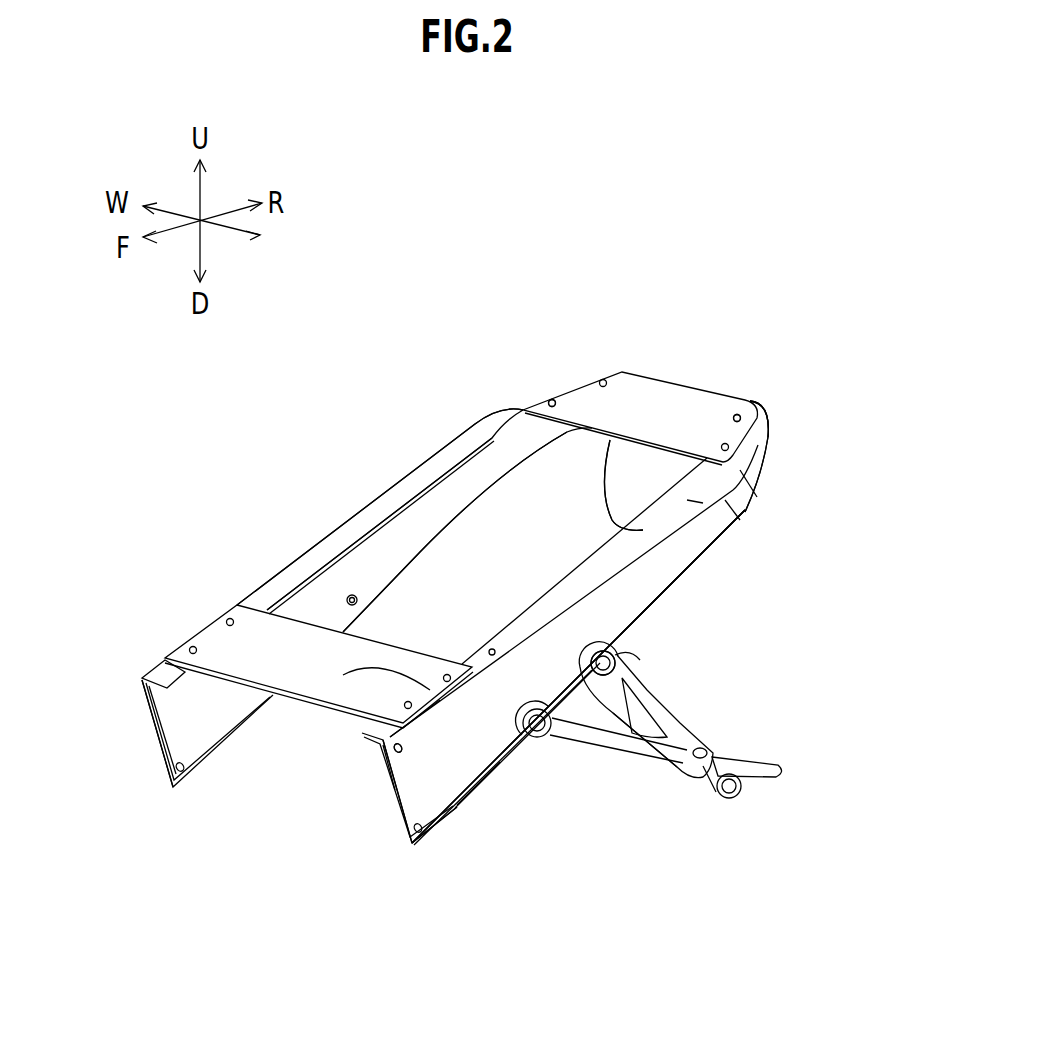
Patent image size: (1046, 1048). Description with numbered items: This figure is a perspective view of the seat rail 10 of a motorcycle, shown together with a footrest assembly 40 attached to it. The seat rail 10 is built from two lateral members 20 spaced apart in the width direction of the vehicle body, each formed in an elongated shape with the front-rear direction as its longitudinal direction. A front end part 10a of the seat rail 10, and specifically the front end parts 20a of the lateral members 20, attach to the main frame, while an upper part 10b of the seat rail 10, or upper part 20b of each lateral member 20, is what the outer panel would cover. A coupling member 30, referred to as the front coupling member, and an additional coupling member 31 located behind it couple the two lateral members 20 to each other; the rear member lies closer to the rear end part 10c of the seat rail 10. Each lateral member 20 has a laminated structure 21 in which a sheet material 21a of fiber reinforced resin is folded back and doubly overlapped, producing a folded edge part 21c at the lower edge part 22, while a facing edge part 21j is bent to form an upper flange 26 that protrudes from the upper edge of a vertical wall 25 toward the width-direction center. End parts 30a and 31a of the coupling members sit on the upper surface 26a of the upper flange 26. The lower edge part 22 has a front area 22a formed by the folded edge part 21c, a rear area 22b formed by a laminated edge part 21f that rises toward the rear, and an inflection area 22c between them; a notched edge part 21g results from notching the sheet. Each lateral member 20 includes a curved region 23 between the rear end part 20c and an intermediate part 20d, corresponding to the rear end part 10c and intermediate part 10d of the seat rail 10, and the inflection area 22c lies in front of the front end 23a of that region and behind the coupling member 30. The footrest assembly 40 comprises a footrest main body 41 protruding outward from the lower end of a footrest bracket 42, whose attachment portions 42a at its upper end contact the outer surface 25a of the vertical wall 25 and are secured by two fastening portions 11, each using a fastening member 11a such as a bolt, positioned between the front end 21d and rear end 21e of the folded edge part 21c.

The seat rail 10 is at (428, 452).
The front end part 10a is at (148, 733).
The upper part 10b is at (590, 587).
The rear end part 10c is at (770, 437).
The intermediate part 10d is at (633, 607).
The fastening portion 11 is at (617, 658).
The fastening member 11a is at (553, 740).
The lateral member 20 is at (284, 568).
The front end part 20a is at (412, 843).
The upper part 20b is at (593, 603).
The rear end part 20c is at (757, 460).
The intermediate part 20d is at (643, 587).
The laminated structure 21 is at (140, 700).
The sheet material 21a is at (405, 752).
The folded edge part 21c is at (457, 808).
The front end 21d is at (410, 853).
The rear end 21e is at (637, 662).
The laminated edge part 21f is at (755, 497).
The notched edge part 21g is at (740, 520).
The facing edge part 21j is at (643, 530).
The lower edge part 22 is at (490, 780).
The front area 22a is at (470, 800).
The rear area 22b is at (700, 578).
The inflection area 22c is at (625, 660).
The curved region 23 is at (705, 470).
The front end 23a is at (703, 503).
The vertical wall 25 is at (423, 777).
The outer surface 25a is at (393, 827).
The upper flange 26 is at (586, 540).
The upper surface 26a is at (490, 650).
The coupling member 30 is at (255, 680).
The end part 30a is at (205, 635).
The additional coupling member 31 is at (680, 407).
The end part 31a is at (578, 400).
The footrest assembly 40 is at (707, 775).
The footrest main body 41 is at (748, 766).
The footrest bracket 42 is at (650, 767).
The attachment portion 42a is at (585, 740).